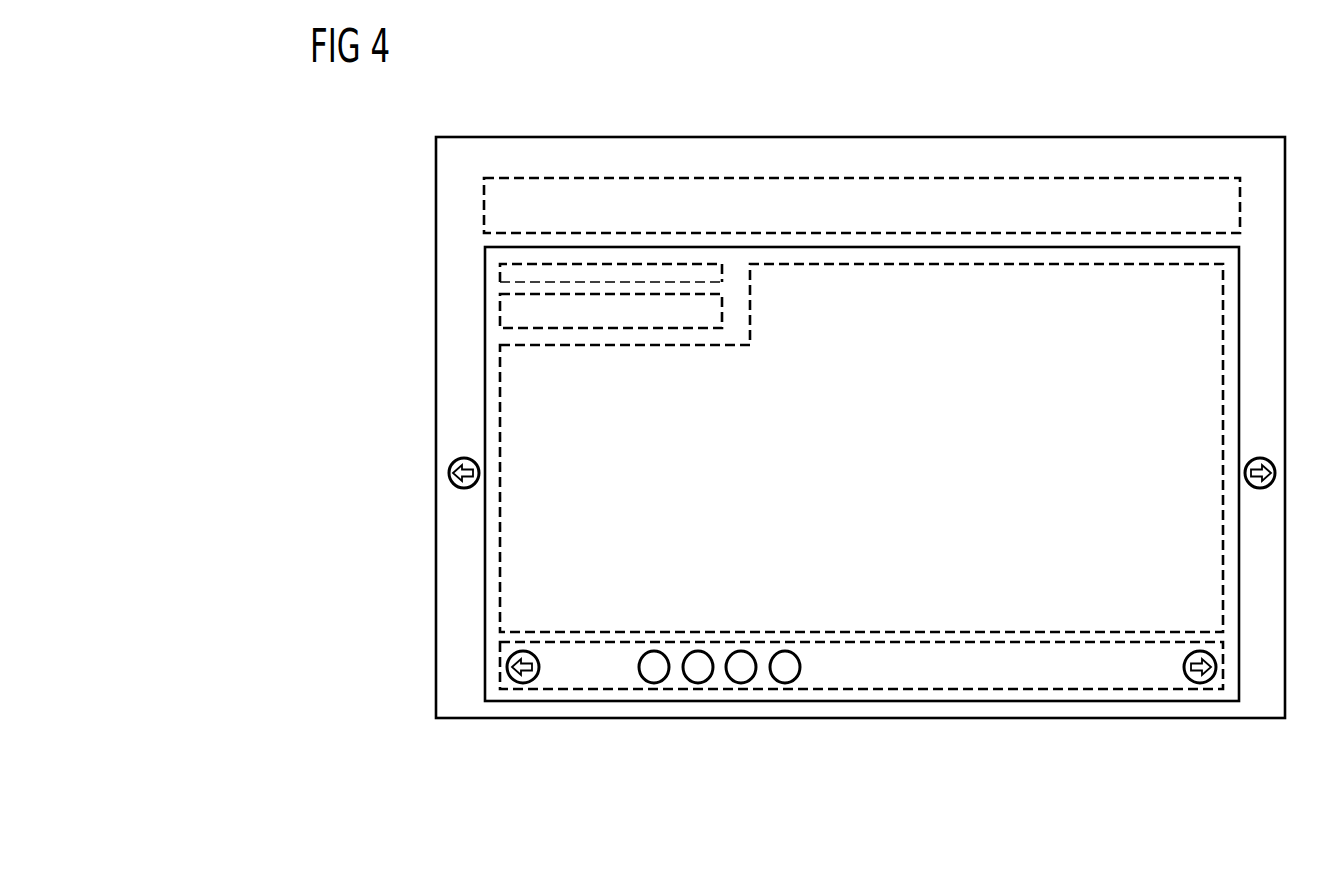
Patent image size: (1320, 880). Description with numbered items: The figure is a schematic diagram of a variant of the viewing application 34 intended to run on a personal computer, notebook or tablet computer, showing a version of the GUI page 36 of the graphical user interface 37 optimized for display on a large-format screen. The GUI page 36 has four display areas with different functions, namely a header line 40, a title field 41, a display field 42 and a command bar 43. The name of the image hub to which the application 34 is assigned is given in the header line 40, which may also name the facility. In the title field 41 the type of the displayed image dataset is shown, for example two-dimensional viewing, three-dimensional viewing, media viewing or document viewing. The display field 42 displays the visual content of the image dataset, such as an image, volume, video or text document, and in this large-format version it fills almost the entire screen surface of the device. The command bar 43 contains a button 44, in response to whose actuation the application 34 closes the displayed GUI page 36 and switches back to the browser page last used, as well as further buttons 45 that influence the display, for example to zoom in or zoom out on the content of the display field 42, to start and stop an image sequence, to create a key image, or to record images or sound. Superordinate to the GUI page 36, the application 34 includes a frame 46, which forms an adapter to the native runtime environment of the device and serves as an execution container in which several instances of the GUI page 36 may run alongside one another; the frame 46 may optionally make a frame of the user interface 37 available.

The application 34 is at (706, 474).
The GUI page 36 is at (485, 567).
The graphical user interface 37 is at (1143, 153).
The header line 40 is at (500, 268).
The title field 41 is at (500, 304).
The display field 42 is at (500, 377).
The command bar 43 is at (1052, 689).
The button 44 is at (449, 474).
The buttons 45 is at (654, 683).
The frame 46 is at (852, 172).